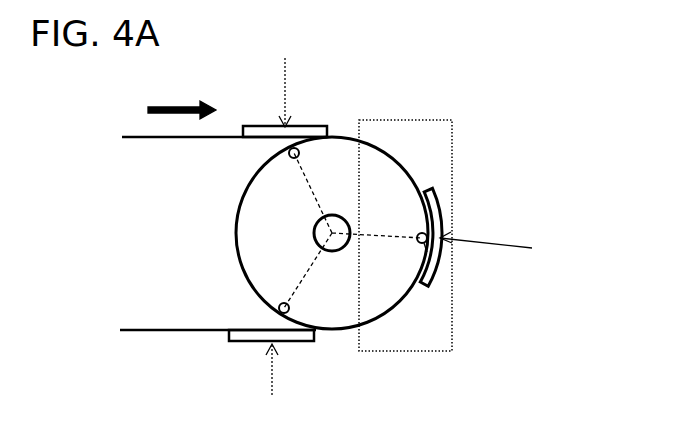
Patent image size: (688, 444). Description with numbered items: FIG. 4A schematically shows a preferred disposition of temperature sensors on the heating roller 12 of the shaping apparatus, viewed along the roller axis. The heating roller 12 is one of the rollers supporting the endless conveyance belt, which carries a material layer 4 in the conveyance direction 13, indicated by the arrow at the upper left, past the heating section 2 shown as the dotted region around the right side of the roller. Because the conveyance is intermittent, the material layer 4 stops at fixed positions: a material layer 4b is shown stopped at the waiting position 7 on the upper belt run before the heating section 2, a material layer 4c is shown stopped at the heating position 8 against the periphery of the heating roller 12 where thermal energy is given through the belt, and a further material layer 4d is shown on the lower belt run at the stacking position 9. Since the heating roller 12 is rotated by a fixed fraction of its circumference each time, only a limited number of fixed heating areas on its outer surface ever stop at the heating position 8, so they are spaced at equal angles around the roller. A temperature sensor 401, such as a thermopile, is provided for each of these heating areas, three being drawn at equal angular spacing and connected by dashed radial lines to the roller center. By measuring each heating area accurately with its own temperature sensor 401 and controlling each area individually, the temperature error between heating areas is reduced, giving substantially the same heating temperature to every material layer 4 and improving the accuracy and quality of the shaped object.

The heating section 2 is at (452, 188).
The heating roller 12 is at (378, 150).
The temperature sensor 401 is at (284, 158).
The material layer 4 is at (377, 221).
The material layer stopped at the waiting position 4b is at (310, 136).
The material layer stopped at the heating position 4c is at (437, 260).
The lower pad 4d is at (247, 343).
The waiting position 7 is at (286, 80).
The stacking position 9 is at (271, 387).
The heating position 8 is at (499, 247).
The conveyance direction 13 is at (181, 108).